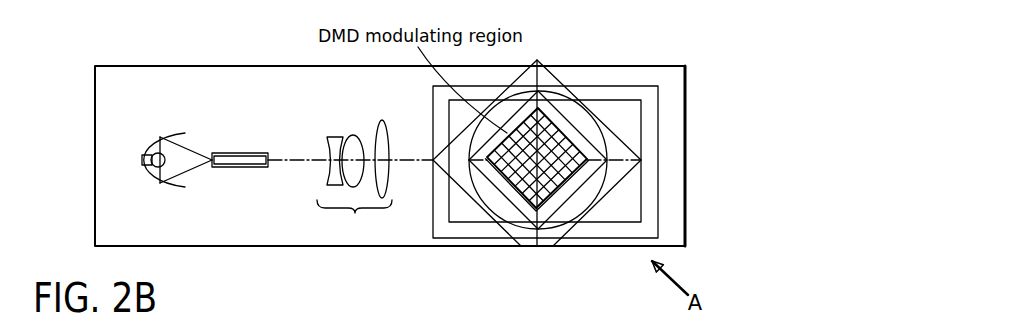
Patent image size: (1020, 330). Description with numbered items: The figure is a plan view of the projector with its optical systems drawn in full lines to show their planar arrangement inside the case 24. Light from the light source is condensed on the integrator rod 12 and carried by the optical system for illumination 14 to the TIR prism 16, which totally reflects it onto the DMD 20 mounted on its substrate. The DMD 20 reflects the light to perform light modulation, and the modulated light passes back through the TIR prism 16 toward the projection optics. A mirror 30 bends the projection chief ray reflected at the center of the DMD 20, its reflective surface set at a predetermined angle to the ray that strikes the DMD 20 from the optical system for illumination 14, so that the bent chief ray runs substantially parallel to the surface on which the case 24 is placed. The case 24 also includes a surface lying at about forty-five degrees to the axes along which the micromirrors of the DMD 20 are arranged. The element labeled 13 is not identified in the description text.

The integrator rod 12 is at (172, 131).
The rod integrator 13 is at (232, 152).
The optical system for illumination 14 is at (354, 178).
The TIR prism 16 is at (638, 98).
The DMD 20 is at (580, 130).
The case 24 is at (685, 117).
The mirror 30 is at (628, 172).